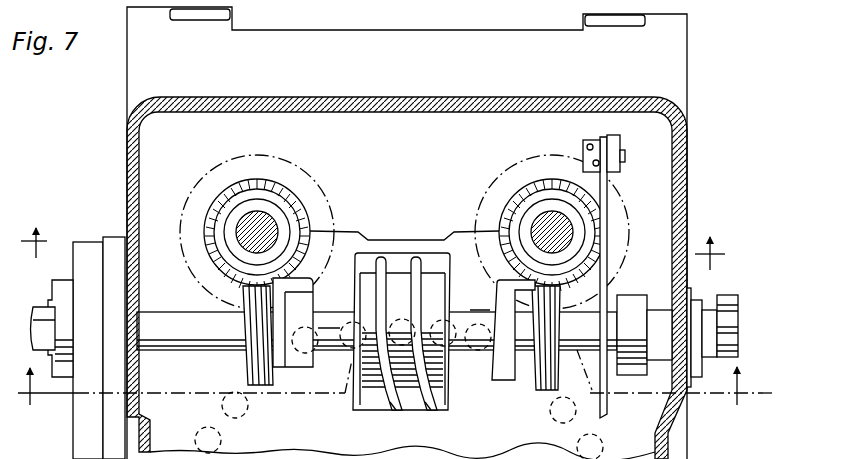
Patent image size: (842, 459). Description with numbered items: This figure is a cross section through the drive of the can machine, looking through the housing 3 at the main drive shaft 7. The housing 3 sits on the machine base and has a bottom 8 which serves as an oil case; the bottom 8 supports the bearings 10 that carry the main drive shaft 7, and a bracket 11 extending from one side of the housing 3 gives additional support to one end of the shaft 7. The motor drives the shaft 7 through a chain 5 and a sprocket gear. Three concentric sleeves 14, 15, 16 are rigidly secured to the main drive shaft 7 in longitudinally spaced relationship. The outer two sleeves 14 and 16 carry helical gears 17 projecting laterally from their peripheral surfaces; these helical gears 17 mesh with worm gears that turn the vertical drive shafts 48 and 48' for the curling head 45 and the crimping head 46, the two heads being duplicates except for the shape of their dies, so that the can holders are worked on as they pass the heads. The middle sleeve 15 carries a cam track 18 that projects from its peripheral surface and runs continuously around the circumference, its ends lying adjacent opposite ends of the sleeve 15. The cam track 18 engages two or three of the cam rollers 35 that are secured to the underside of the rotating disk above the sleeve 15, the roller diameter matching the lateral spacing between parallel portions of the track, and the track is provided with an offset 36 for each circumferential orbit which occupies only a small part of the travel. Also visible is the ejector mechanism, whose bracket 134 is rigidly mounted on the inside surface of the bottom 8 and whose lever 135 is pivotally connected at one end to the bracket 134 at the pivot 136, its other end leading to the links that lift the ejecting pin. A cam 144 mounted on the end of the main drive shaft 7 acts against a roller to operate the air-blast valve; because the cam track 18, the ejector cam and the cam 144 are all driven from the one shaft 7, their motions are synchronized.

The housing 3 is at (688, 199).
The chain 5 is at (396, 391).
The main drive shaft 7 is at (158, 312).
The bottom 8 is at (373, 258).
The bearings 10 is at (404, 309).
The bracket 11 is at (73, 452).
The sleeve 14 is at (290, 324).
The sleeve 15 is at (393, 280).
The sleeve 16 is at (513, 361).
The helical gears 17 is at (246, 367).
The cam track 18 is at (400, 408).
The cam rollers 35 is at (399, 358).
The offset 36 is at (428, 408).
The curling head 45 is at (347, 161).
The crimping head 46 is at (523, 177).
The vertical drive shaft 48 is at (220, 219).
The vertical drive shaft 48' is at (516, 224).
The bracket 134 is at (655, 190).
The lever 135 is at (609, 205).
The pivot connection 136 is at (615, 153).
The cam 144 is at (777, 277).